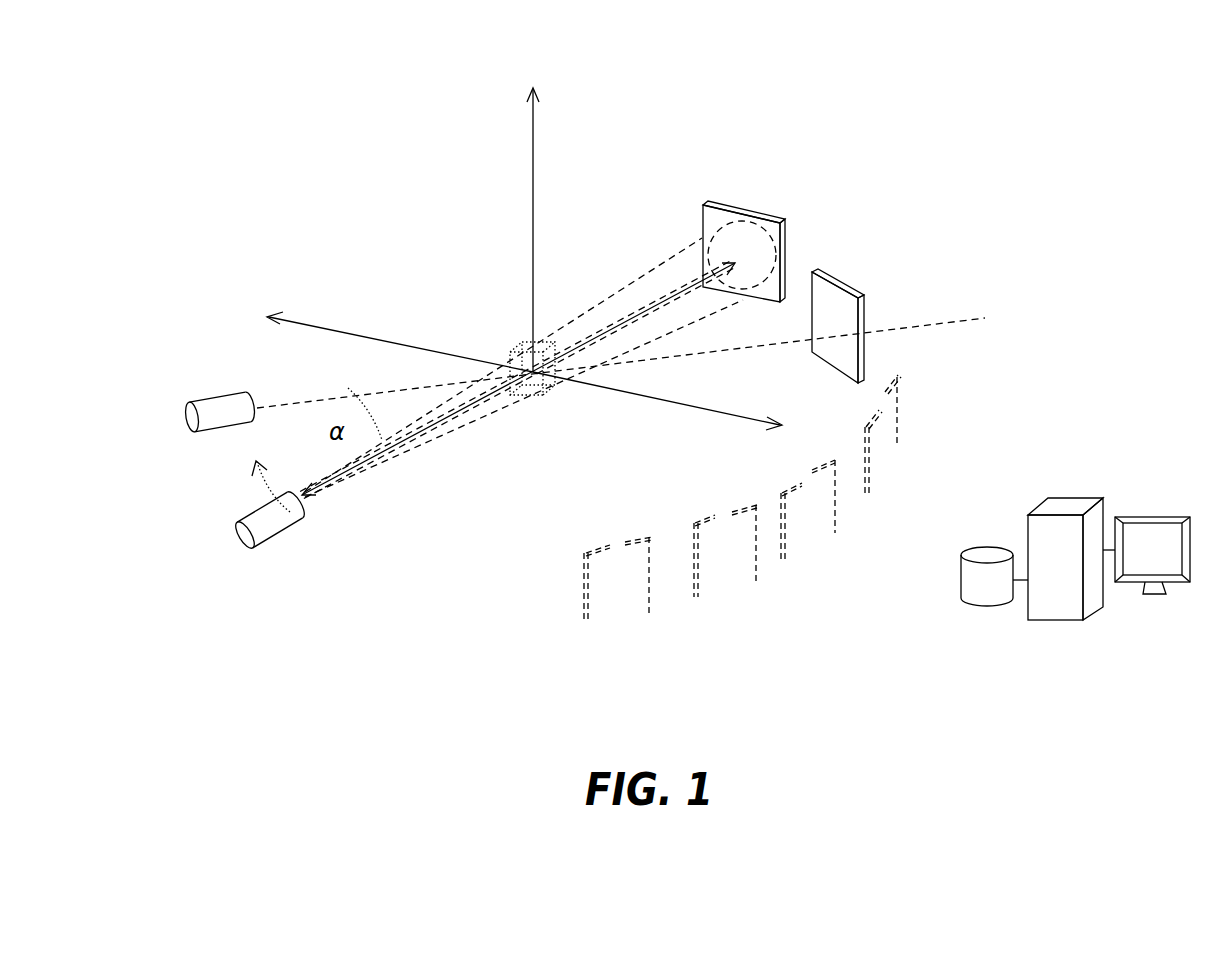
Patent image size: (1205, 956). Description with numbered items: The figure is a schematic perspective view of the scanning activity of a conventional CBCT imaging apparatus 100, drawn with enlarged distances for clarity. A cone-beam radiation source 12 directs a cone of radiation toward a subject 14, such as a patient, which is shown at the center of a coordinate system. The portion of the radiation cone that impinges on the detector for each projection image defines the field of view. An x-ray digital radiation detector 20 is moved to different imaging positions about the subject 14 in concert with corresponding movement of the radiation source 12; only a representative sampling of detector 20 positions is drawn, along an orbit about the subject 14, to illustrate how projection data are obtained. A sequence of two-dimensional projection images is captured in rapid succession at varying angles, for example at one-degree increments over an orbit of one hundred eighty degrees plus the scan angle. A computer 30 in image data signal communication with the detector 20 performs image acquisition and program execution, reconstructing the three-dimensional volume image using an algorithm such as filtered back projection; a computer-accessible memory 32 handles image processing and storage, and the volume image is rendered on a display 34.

The CBCT imaging apparatus 100 is at (277, 214).
The cone-beam radiation source 12 is at (270, 543).
The subject 14 is at (547, 388).
The DR detector 20 is at (760, 212).
The computer 30 is at (1070, 586).
The computer-accessible memory 32 is at (1000, 593).
The display 34 is at (1163, 559).